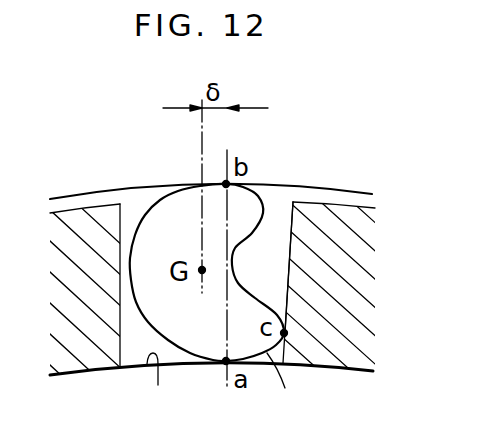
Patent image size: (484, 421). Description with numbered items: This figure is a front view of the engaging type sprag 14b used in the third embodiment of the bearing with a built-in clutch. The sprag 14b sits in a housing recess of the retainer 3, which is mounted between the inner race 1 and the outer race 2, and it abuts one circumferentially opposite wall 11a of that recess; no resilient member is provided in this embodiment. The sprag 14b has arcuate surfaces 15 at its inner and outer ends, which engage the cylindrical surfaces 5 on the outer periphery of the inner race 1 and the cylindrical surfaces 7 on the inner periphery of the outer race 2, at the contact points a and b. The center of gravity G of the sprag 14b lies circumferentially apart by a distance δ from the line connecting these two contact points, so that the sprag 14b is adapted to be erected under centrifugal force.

The inner race 1 is at (102, 378).
The outer race 2 is at (116, 168).
The retainer 3 is at (348, 213).
The cylindrical surfaces 5 is at (157, 385).
The cylindrical surfaces 7 is at (70, 196).
The wall 11a is at (282, 230).
The engaging type sprag 14b is at (173, 212).
The arcuate surfaces 15 is at (285, 386).